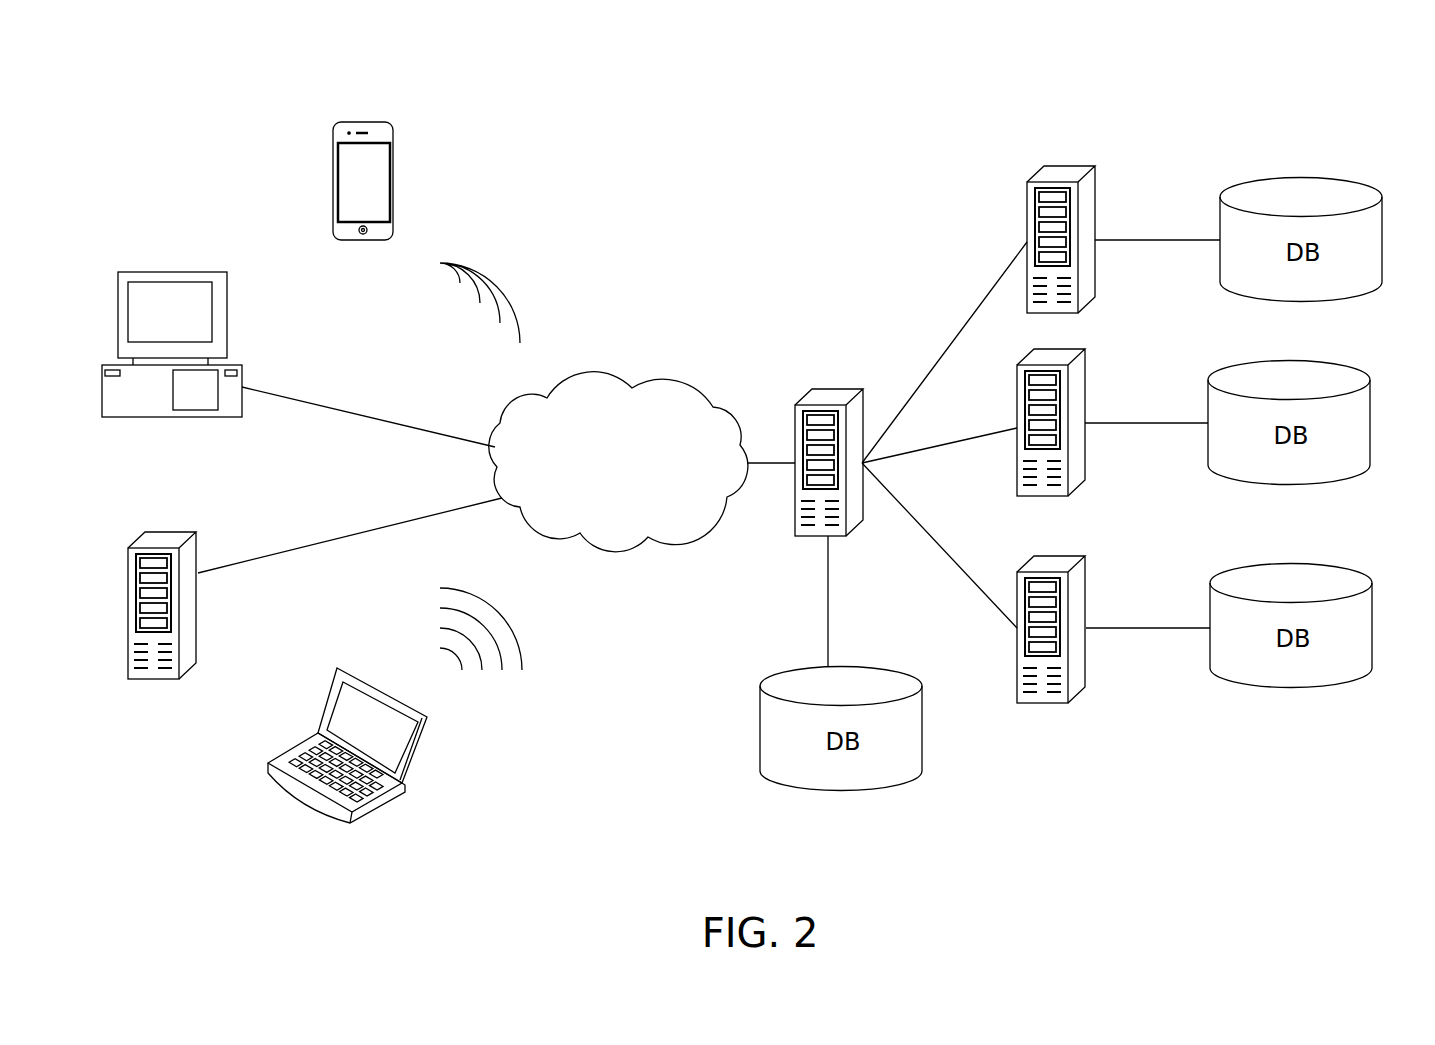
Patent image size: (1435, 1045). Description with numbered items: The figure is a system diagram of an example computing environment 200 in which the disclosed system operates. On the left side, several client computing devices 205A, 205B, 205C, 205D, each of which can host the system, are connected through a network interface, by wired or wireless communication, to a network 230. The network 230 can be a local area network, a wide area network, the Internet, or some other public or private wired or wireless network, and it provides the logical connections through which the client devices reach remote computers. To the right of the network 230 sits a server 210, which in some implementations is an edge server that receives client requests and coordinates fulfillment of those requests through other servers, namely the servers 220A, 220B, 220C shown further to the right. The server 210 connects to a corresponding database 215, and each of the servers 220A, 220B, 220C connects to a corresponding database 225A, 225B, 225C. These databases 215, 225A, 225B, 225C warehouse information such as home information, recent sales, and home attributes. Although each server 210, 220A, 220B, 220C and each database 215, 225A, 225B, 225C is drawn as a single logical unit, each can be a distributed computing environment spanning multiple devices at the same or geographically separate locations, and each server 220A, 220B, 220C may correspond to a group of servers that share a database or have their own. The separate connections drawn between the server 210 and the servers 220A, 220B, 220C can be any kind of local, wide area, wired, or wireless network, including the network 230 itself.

The environment 200 is at (222, 74).
The client computing device 205A is at (393, 130).
The client computing device 205B is at (222, 287).
The client computing device 205C is at (185, 532).
The client computing device 205D is at (410, 773).
The network 230 is at (642, 386).
The server 210 is at (849, 386).
The database 215 is at (847, 670).
The server 220A is at (1075, 167).
The database 225A is at (1310, 180).
The server 220B is at (1065, 350).
The database 225B is at (1298, 362).
The server 220C is at (1067, 555).
The database 225C is at (1328, 581).